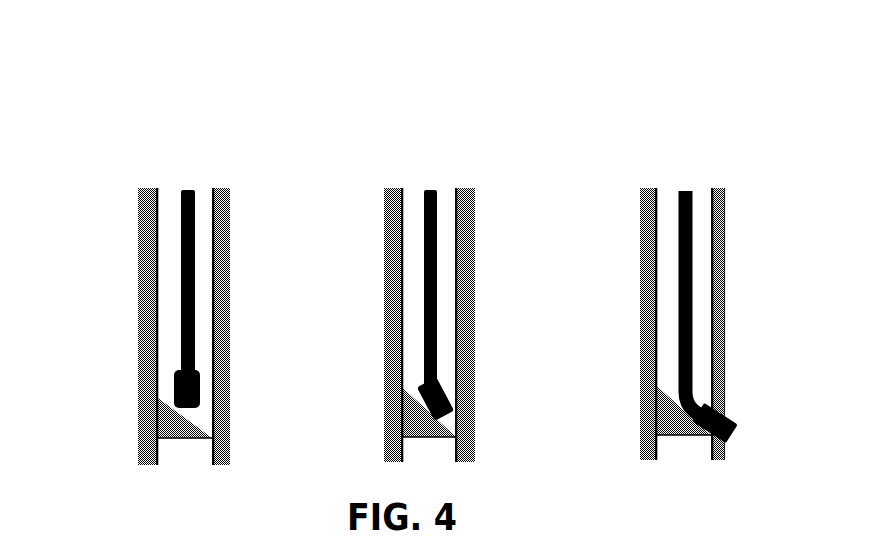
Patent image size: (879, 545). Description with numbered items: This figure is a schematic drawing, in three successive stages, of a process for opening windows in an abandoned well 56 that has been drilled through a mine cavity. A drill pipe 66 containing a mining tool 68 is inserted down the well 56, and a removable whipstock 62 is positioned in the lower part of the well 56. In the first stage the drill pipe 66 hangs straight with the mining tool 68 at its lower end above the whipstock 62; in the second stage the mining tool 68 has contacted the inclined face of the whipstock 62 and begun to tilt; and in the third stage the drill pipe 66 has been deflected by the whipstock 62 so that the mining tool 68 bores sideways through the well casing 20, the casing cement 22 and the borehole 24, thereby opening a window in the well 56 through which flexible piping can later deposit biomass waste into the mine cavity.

The well 56 is at (115, 242).
The drill pipe 66 is at (197, 318).
The mining tool 68 is at (201, 385).
The removable whipstock 62 is at (172, 425).
The well casing 20 is at (714, 373).
The casing cement 22 is at (719, 335).
The borehole 24 is at (729, 304).